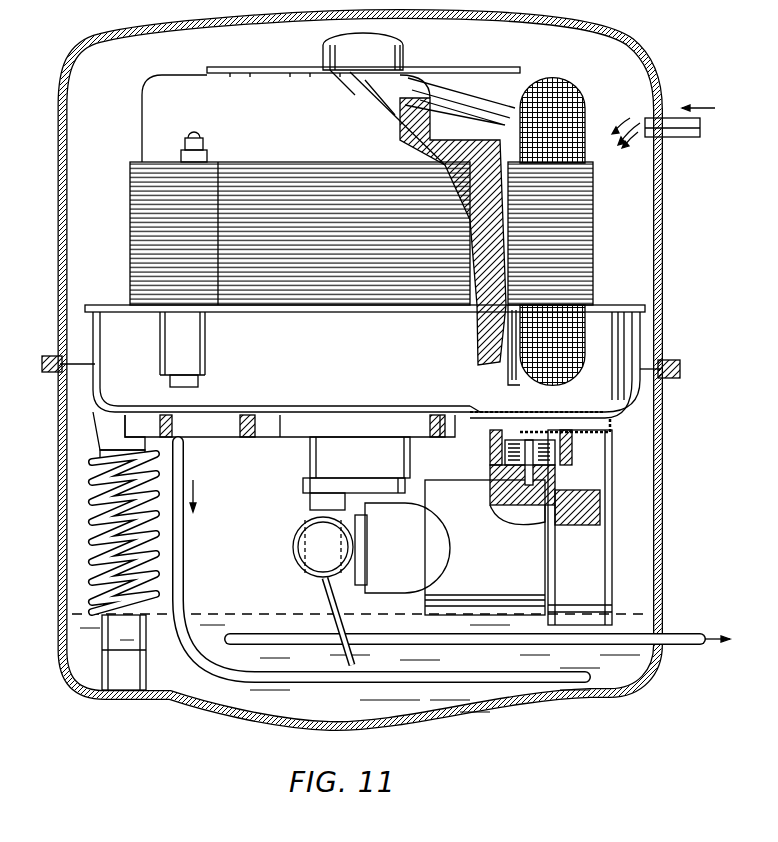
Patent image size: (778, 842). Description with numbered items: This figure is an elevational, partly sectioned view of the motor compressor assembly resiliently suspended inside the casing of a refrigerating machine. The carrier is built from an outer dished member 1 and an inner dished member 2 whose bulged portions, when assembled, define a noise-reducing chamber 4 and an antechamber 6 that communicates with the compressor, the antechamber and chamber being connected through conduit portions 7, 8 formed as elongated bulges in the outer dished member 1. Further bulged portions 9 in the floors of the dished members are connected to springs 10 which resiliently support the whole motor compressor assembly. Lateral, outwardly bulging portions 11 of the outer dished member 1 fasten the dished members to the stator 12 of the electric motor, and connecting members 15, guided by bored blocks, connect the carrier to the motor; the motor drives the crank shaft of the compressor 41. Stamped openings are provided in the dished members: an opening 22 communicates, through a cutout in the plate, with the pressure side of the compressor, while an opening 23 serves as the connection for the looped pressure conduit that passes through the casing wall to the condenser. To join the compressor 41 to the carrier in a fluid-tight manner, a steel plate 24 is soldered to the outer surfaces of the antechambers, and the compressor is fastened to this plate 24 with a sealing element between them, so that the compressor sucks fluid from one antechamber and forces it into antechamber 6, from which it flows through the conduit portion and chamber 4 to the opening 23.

The outer dished member 1 is at (641, 331).
The inner dished member 2 is at (630, 309).
The noise-reducing chamber 4 is at (297, 455).
The antechamber 6 is at (612, 426).
The conduit portion 7 is at (272, 443).
The conduit portion 8 is at (448, 437).
The bulged portion 9 is at (108, 420).
The spring 10 is at (158, 542).
The lateral outwardly bulging portion 11 is at (175, 340).
The stator 12 is at (580, 213).
The connecting member 15 is at (205, 134).
The opening 22 is at (540, 421).
The opening 23 is at (186, 448).
The steel plate 24 is at (600, 455).
The compressor 41 is at (510, 571).